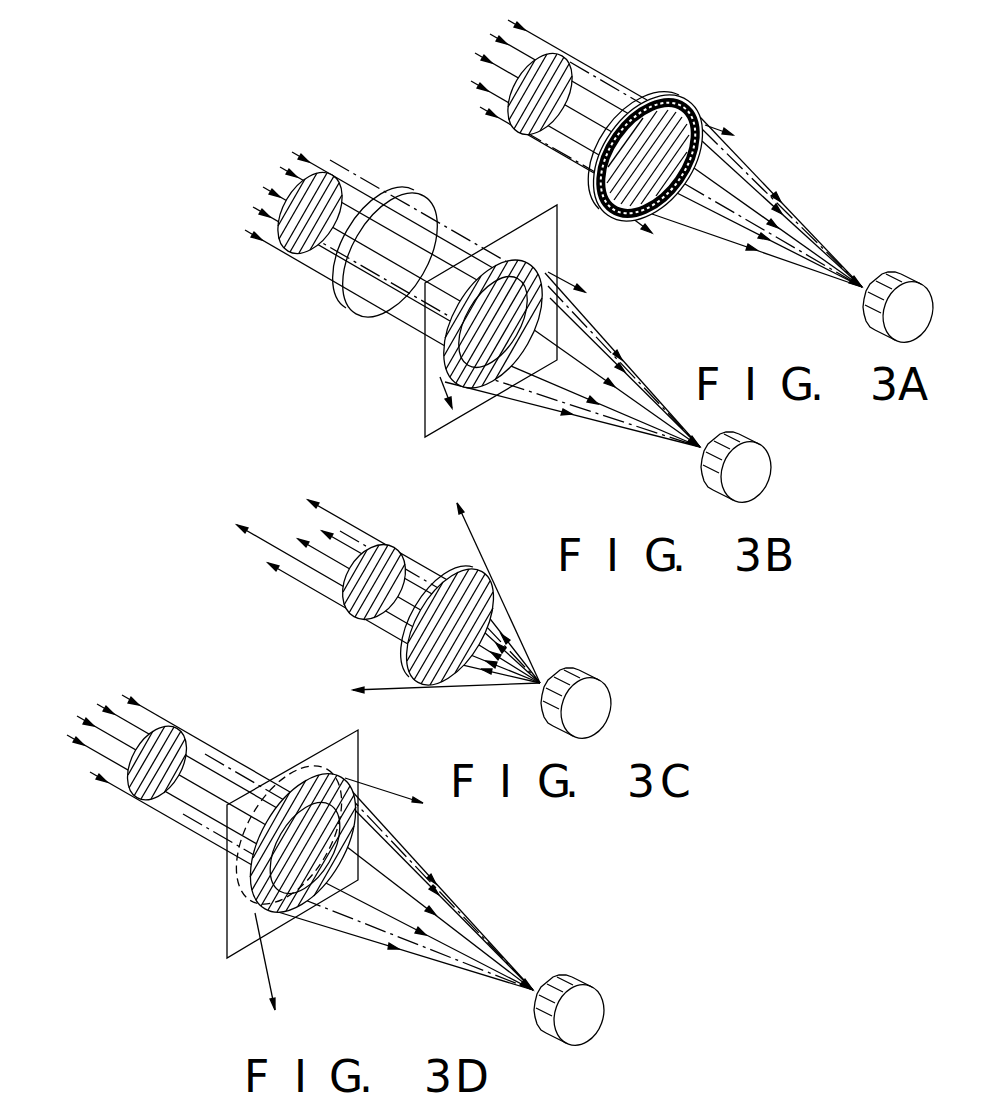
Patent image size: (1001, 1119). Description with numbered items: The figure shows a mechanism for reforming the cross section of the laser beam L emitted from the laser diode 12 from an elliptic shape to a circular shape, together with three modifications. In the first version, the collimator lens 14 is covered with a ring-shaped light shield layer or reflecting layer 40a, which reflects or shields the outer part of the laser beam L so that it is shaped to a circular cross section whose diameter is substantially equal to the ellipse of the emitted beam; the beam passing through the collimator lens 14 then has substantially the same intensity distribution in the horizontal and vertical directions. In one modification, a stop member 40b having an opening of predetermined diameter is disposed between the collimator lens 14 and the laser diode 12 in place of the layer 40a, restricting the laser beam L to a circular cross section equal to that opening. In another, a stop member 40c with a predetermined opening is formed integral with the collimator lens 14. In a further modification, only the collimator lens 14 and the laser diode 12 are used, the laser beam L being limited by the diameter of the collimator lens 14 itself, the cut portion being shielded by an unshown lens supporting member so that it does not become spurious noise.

In FIG. 3A, the laser diode 12 is at (906, 274).
In FIG. 3B, the laser diode 12 is at (757, 448).
In FIG. 3C, the laser diode 12 is at (603, 680).
In FIG. 3D, the laser diode 12 is at (589, 984).
In FIG. 3A, the collimator lens 14 is at (648, 96).
In FIG. 3B, the collimator lens 14 is at (422, 212).
In FIG. 3C, the collimator lens 14 is at (455, 582).
In FIG. 3D, the collimator lens 14 is at (310, 782).
In FIG. 3A, the light shield layer or reflecting layer 40a is at (692, 100).
In FIG. 3B, the stop member 40b is at (547, 255).
In FIG. 3D, the stop member 40c is at (360, 758).
In FIG. 3A, the beam cross-section (pupil image) E is at (556, 58).
In FIG. 3B, the beam cross-section (pupil image) E is at (295, 190).
In FIG. 3C, the beam cross-section (pupil image) E is at (362, 570).
In FIG. 3D, the beam cross-section (pupil image) E is at (145, 795).
In FIG. 3A, the laser beam L is at (573, 64).
In FIG. 3B, the laser beam L is at (340, 180).
In FIG. 3C, the laser beam L is at (348, 522).
In FIG. 3D, the laser beam L is at (178, 732).